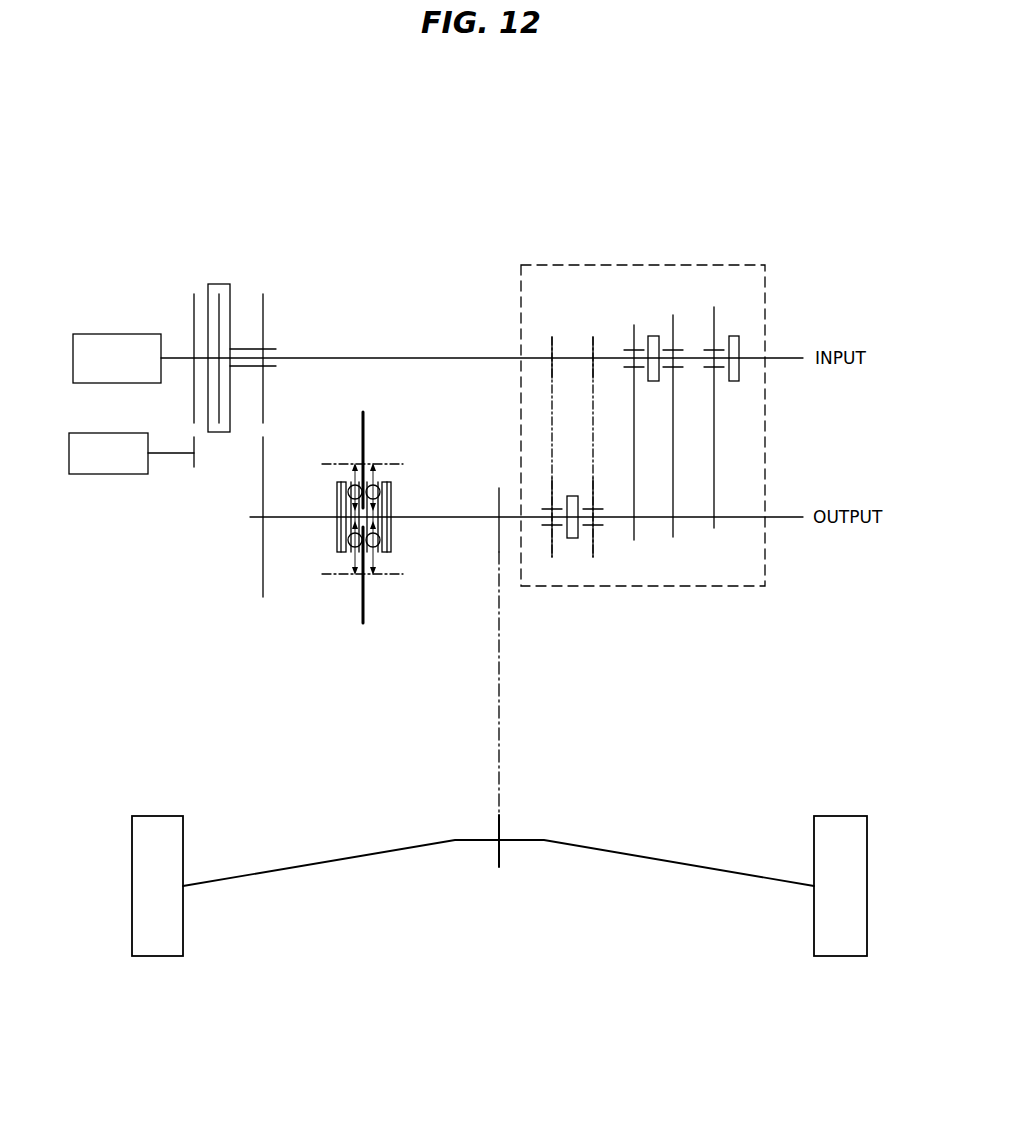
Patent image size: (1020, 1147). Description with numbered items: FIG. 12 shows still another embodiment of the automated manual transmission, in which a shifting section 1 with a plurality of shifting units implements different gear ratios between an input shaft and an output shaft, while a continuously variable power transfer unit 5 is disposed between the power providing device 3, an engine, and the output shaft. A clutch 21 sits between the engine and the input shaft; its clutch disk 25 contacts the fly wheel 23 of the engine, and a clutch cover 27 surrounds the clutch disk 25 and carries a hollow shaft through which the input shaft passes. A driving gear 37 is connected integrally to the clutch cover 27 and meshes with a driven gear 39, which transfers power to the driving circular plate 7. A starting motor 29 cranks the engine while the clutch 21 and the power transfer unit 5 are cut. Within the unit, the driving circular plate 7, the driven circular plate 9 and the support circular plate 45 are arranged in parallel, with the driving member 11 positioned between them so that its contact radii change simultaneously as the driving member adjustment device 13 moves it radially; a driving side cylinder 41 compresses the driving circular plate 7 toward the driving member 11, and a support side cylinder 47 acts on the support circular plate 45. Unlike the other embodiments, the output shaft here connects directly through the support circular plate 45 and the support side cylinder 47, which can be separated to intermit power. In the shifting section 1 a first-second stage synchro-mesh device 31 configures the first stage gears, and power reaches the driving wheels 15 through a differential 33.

The shifting section 1 is at (673, 265).
The power providing device 3 is at (85, 334).
The continuously variable power transfer unit 5 is at (323, 580).
The driving circular plate 7 is at (350, 482).
The driven circular plate 9 is at (364, 450).
The driving member 11 is at (340, 542).
The driving member adjustment device 13 is at (383, 482).
The wheel 15 is at (157, 822).
The clutch 21 is at (214, 440).
The fly wheel 23 is at (194, 298).
The clutch disk 25 is at (219, 292).
The clutch cover 27 is at (230, 302).
The starting motor 29 is at (108, 475).
The first-second stage synchro-mesh device 31 is at (572, 540).
The differential 33 is at (455, 810).
The driving gear 37 is at (263, 298).
The driven gear 39 is at (263, 560).
The driving side cylinder 41 is at (340, 490).
The support circular plate 45 is at (376, 555).
The support side cylinder 47 is at (391, 545).